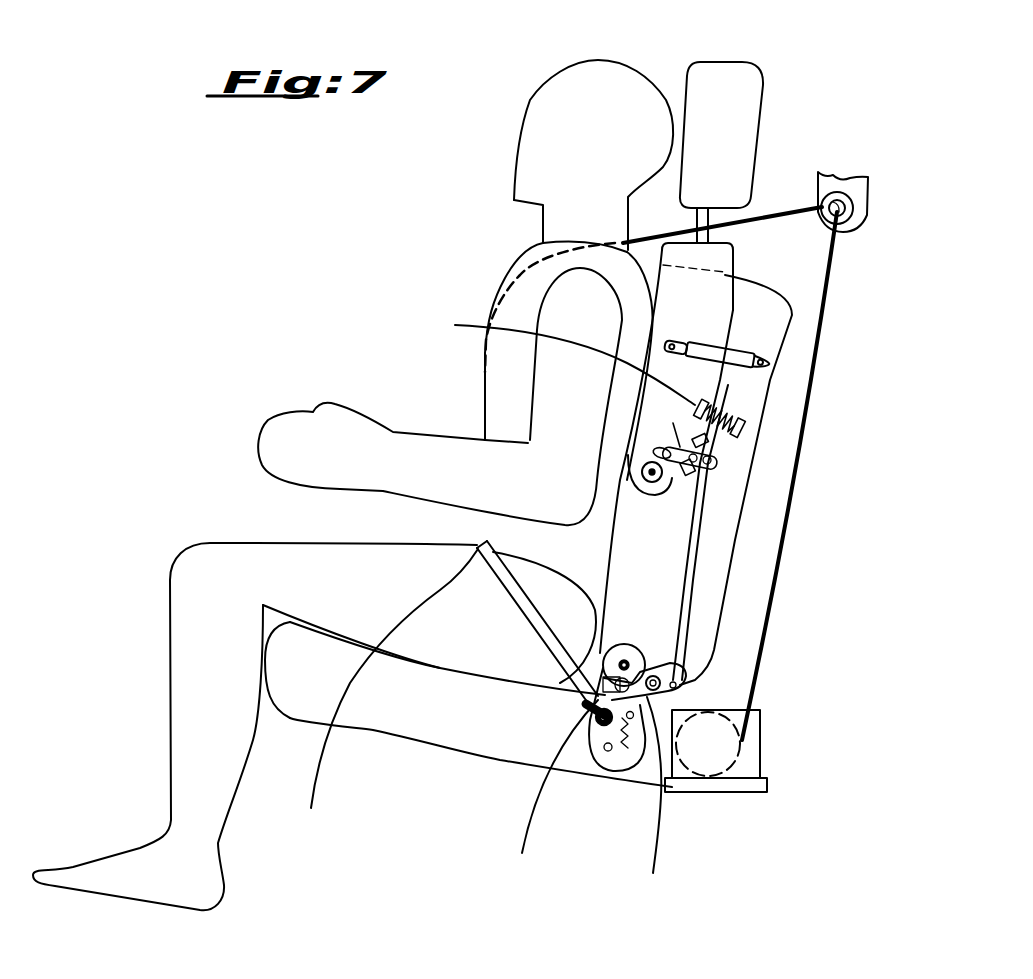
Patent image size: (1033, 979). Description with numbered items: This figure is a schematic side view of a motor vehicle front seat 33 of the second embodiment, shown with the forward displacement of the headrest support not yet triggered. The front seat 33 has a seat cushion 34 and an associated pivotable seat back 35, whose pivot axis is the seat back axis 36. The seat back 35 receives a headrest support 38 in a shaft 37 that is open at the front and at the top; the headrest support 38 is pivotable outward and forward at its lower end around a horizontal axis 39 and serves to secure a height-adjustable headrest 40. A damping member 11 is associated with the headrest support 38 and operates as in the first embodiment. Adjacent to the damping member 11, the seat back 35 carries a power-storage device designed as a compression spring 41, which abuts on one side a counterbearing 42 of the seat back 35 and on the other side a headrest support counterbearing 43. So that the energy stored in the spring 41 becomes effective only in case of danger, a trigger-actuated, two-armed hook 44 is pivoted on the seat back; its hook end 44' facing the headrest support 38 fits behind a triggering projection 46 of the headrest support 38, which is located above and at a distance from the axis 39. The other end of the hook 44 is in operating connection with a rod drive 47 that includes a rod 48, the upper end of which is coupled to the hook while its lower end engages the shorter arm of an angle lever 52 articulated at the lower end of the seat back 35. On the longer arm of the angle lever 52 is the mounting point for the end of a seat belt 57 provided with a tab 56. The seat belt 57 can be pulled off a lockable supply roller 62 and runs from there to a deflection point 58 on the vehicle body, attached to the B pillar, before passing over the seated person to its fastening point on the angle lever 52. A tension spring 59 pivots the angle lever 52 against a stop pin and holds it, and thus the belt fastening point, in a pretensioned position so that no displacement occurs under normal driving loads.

The damping member 11 is at (737, 357).
The front seat 33 is at (490, 806).
The seat cushion 34 is at (417, 720).
The seat back 35 is at (710, 553).
The seat back axis 36 is at (625, 655).
The shaft 37 is at (733, 322).
The headrest support 38 is at (693, 307).
The horizontal axis 39 is at (660, 475).
The headrest 40 is at (733, 90).
The spring 41 is at (733, 415).
The counterbearing 42 is at (745, 430).
The headrest support counterbearing 43 is at (549, 356).
The hook 44 is at (682, 418).
The hook end 44' is at (640, 421).
The triggering projection 46 is at (653, 450).
The rod drive 47 is at (692, 615).
The rod 48 is at (682, 653).
The angle lever 52 is at (655, 807).
The tab 56 is at (537, 716).
The seat belt 57 is at (793, 482).
The deflection point 58 is at (838, 192).
The tension spring 59 is at (626, 735).
The supply roller 62 is at (728, 757).